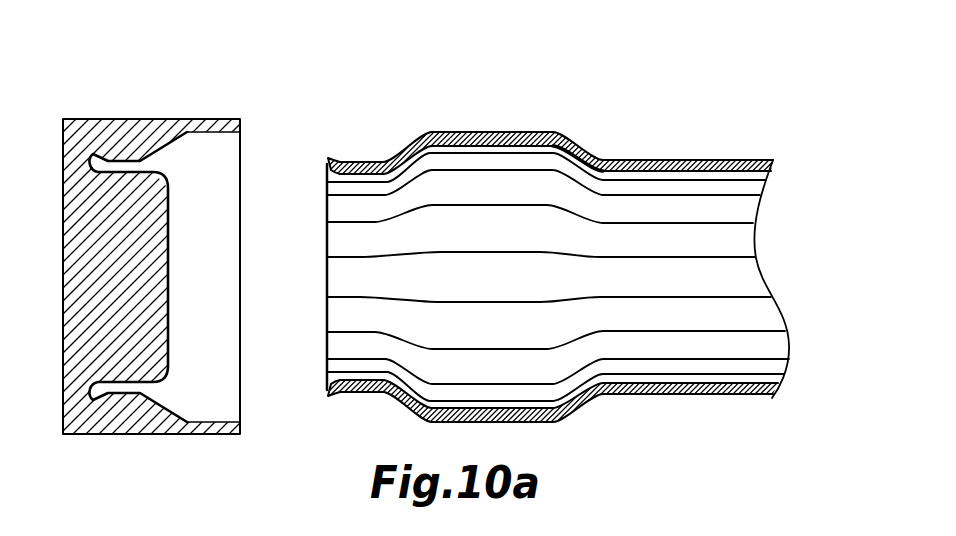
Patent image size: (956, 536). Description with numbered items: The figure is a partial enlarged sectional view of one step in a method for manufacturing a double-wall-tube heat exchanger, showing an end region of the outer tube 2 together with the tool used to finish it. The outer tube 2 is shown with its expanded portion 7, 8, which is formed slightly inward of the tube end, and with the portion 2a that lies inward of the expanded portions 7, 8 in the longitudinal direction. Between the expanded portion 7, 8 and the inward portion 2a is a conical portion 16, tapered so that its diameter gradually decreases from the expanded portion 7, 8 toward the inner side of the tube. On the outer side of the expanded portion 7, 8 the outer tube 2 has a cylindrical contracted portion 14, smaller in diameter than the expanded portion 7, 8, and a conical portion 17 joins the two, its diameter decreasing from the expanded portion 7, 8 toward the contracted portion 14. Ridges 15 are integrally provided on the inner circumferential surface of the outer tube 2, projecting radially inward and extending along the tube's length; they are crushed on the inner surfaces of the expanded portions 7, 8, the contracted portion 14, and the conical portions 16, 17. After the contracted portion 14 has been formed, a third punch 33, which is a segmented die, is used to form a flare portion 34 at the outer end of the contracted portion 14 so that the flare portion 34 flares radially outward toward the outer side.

The outer tube 2 is at (488, 245).
The portion located inward of the expanded portions 2a is at (683, 160).
The expanded portion 7 is at (497, 251).
The expanded portion 8 is at (482, 132).
The contracted portion 14 is at (358, 162).
The ridge 15 is at (763, 330).
The conical portion 16 is at (588, 145).
The conical portion 17 is at (397, 152).
The third punch 33 is at (102, 143).
The flare portion 34 is at (328, 162).